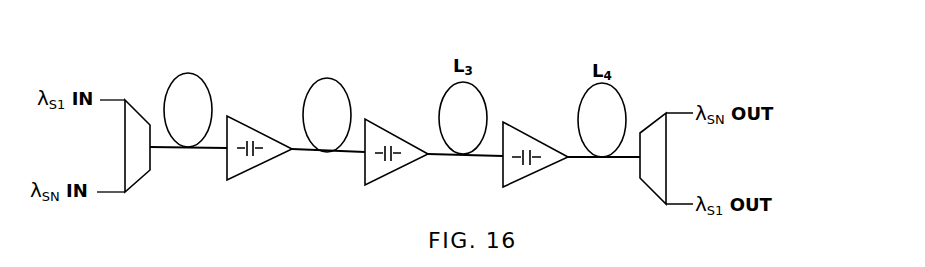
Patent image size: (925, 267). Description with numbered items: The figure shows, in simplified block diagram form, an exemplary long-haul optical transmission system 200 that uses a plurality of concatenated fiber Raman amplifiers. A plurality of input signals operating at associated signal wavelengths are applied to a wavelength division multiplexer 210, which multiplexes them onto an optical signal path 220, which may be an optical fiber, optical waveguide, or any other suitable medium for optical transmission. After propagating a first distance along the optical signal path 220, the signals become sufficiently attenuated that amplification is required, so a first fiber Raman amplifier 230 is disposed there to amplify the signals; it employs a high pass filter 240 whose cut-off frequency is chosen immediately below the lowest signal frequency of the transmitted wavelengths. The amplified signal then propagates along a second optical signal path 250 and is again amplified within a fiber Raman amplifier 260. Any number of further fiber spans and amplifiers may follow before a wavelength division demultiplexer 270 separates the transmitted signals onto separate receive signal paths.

The long-haul optical transmission system 200 is at (862, 80).
The wavelength division multiplexer 210 is at (140, 178).
The optical signal path 220 is at (172, 98).
The first fiber Raman amplifier 230 is at (244, 127).
The high pass filter 240 is at (246, 152).
The second optical signal path 250 is at (341, 85).
The fiber Raman amplifier 260 is at (382, 133).
The wavelength division demultiplexer 270 is at (652, 178).